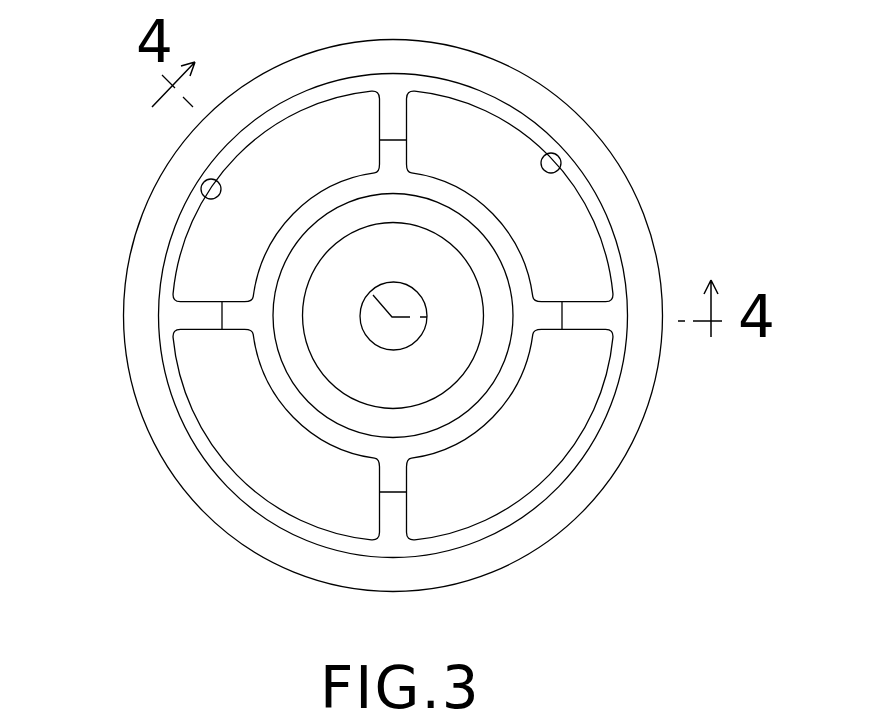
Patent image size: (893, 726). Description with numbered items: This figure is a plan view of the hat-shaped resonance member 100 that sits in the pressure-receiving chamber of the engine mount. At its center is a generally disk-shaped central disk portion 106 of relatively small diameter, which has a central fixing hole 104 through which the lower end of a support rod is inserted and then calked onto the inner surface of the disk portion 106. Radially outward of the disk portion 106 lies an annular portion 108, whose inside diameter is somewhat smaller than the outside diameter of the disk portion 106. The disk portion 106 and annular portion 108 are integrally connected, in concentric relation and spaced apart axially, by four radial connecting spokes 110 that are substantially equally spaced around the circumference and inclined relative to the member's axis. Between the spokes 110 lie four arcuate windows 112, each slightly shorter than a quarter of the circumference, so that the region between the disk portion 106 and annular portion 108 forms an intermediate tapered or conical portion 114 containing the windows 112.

The hat-shaped resonance member 100 is at (592, 38).
The central fixing hole 104 is at (380, 348).
The central disk portion 106 is at (265, 426).
The annular portion 108 is at (646, 199).
The radial connecting spokes 110 is at (397, 122).
The arcuate windows 112 is at (548, 160).
The tapered or conical portion 114 is at (340, 127).